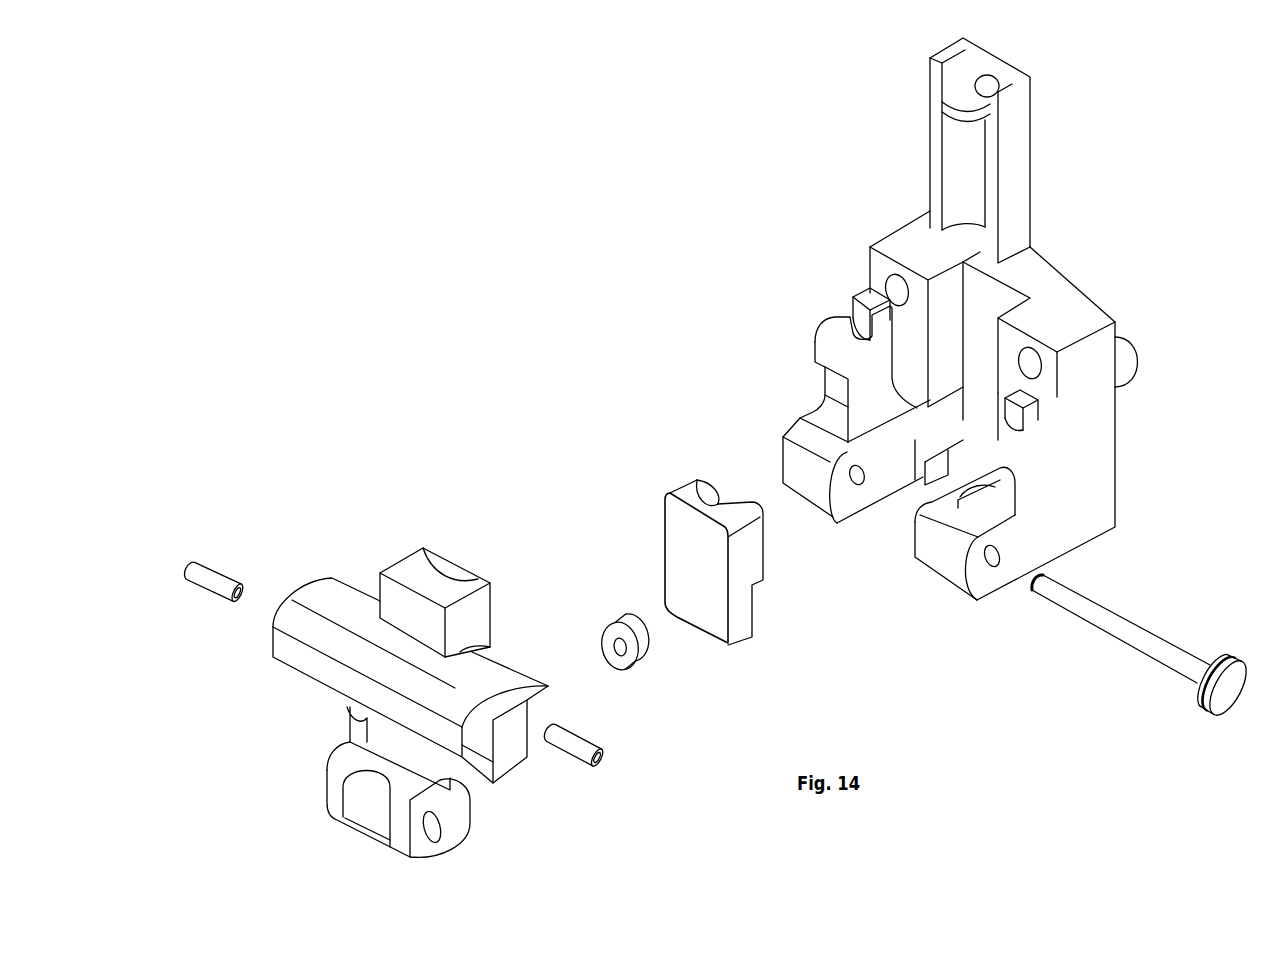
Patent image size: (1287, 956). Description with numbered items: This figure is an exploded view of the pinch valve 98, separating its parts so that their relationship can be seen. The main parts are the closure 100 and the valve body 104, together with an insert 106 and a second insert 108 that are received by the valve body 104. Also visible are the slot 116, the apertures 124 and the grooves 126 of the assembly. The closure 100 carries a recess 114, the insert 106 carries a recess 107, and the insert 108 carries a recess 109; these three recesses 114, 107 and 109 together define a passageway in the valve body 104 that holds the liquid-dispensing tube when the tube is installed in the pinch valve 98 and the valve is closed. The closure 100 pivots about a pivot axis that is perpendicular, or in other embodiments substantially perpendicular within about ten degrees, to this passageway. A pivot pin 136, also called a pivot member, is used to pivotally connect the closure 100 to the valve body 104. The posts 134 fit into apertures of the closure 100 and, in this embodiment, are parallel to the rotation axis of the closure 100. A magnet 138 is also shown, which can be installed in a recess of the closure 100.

The pinch valve 98 is at (502, 162).
The closure 100 is at (348, 595).
The valve body 104 is at (1082, 315).
The insert 106 is at (673, 537).
The recess 107 is at (718, 503).
The insert 108 is at (932, 148).
The recess 109 is at (952, 158).
The recess 114 is at (432, 572).
The slot 116 is at (433, 835).
The apertures 124 is at (857, 483).
The grooves 126 is at (853, 325).
The posts 134 is at (205, 565).
The pivot pin 136 is at (1095, 622).
The magnet 138 is at (618, 637).